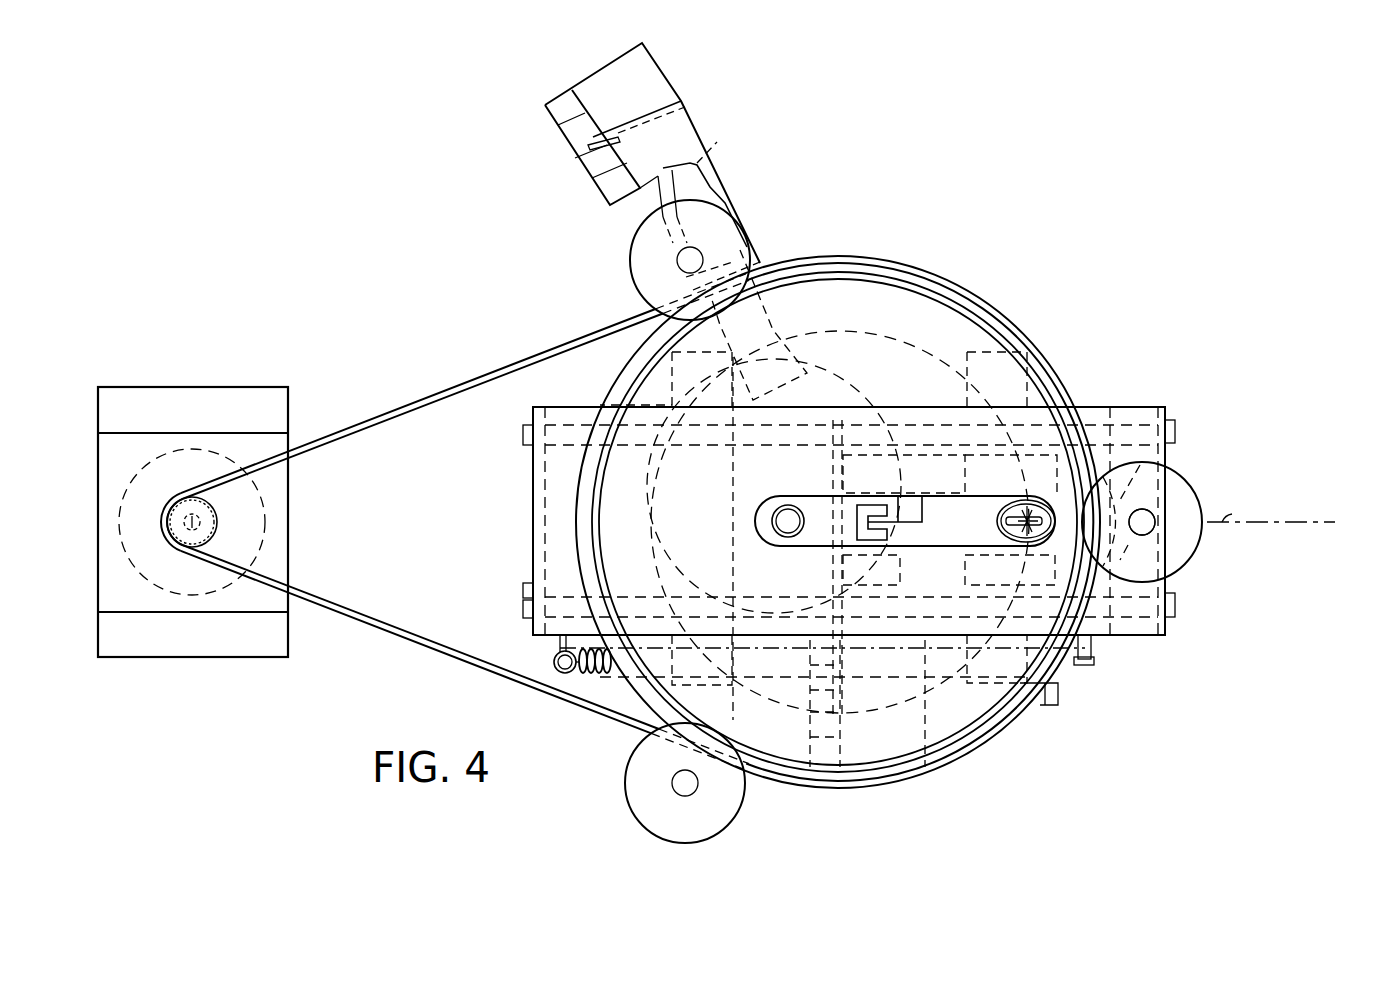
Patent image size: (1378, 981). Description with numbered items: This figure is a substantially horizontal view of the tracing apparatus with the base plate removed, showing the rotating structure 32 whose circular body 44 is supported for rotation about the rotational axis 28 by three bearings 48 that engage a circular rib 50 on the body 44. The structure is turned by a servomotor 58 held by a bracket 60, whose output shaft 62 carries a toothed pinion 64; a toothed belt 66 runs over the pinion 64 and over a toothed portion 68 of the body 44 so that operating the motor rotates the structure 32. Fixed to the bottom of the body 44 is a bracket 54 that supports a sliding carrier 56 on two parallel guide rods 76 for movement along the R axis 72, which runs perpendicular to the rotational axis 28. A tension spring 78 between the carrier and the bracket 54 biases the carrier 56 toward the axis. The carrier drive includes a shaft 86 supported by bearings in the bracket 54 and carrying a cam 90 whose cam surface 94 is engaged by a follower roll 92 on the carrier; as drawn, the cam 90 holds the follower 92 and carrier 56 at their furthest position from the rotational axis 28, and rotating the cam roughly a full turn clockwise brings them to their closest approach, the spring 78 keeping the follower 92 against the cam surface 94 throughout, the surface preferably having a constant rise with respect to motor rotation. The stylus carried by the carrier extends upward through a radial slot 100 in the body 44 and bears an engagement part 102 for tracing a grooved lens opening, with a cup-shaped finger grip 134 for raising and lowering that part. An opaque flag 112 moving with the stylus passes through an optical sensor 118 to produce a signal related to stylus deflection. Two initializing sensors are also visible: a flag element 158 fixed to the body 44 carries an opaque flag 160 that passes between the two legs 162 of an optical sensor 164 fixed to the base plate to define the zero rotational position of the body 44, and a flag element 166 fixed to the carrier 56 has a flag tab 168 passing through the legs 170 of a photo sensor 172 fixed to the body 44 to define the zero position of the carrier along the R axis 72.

The rotational axis 28 is at (832, 518).
The rotating structure 32 is at (985, 315).
The body 44 is at (922, 295).
The bearings 48 is at (632, 252).
The circular rib 50 is at (652, 362).
The bracket 54 is at (560, 410).
The sliding carrier 56 is at (1112, 410).
The servomotor 58 is at (268, 518).
The bracket 60 is at (288, 412).
The output shaft 62 is at (200, 500).
The toothed pinion 64 is at (200, 540).
The toothed belt 66 is at (482, 388).
The toothed portion 68 is at (578, 482).
The R axis 72 is at (1262, 522).
The guide rods 76 is at (1176, 430).
The tension spring 78 is at (600, 674).
The shaft 86 is at (788, 508).
The cam 90 is at (896, 343).
The follower roll 92 is at (1132, 505).
The cam surface 94 is at (822, 332).
The radial slot 100 is at (790, 546).
The engagement part 102 is at (1008, 522).
The opaque flag 112 is at (902, 508).
The optical sensor 118 is at (862, 500).
The finger grip 134 is at (1025, 545).
The flag element 158 is at (690, 132).
The opaque flag 160 is at (604, 142).
The legs 162 is at (580, 165).
The optical sensor 164 is at (568, 92).
The flag element 166 is at (1072, 690).
The flag tab 168 is at (1040, 705).
The legs 170 is at (842, 736).
The photo sensor 172 is at (958, 745).